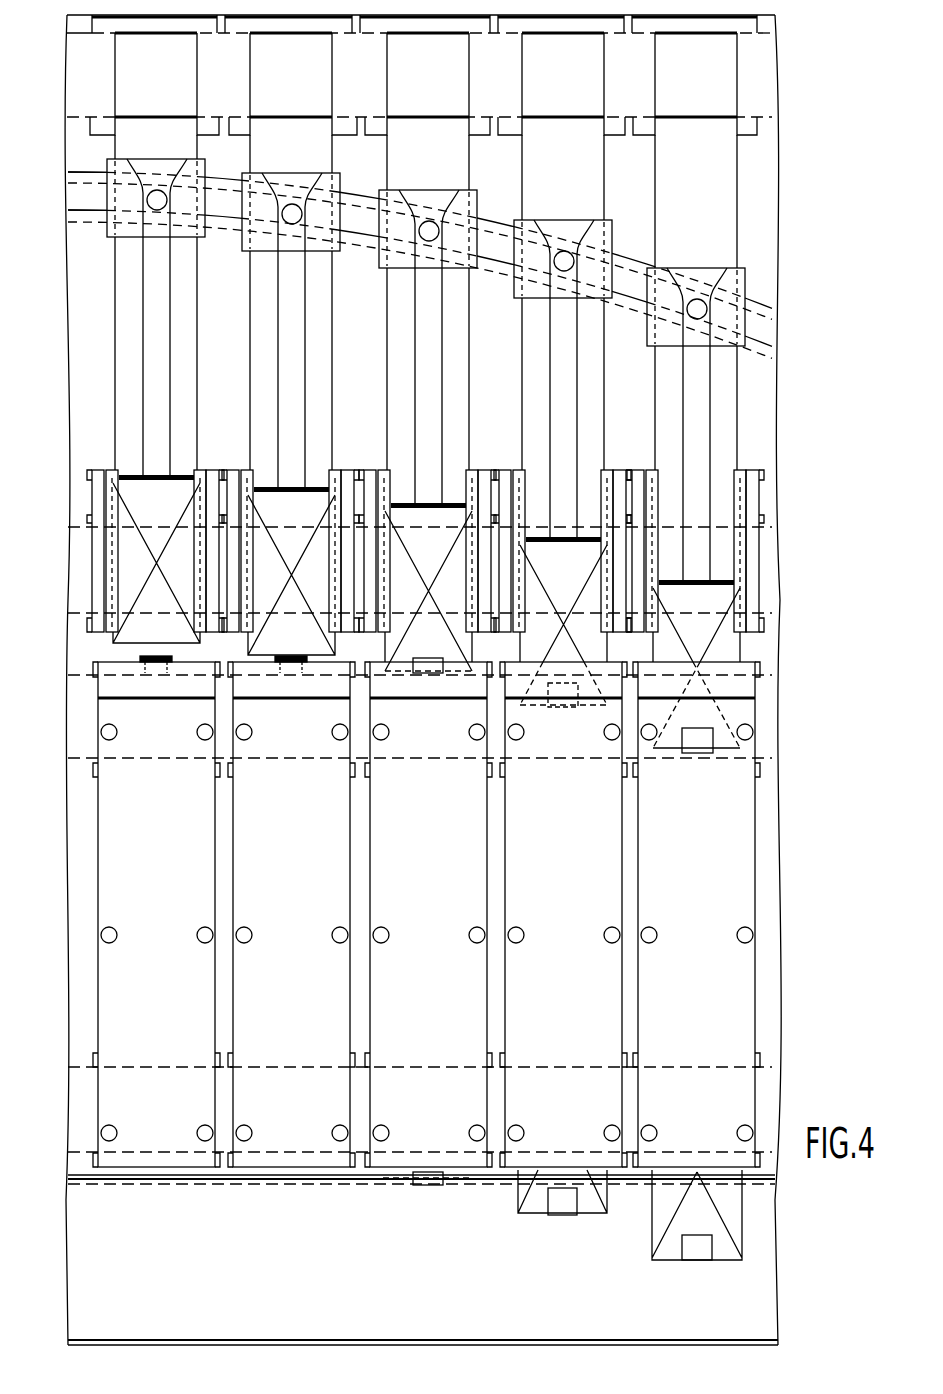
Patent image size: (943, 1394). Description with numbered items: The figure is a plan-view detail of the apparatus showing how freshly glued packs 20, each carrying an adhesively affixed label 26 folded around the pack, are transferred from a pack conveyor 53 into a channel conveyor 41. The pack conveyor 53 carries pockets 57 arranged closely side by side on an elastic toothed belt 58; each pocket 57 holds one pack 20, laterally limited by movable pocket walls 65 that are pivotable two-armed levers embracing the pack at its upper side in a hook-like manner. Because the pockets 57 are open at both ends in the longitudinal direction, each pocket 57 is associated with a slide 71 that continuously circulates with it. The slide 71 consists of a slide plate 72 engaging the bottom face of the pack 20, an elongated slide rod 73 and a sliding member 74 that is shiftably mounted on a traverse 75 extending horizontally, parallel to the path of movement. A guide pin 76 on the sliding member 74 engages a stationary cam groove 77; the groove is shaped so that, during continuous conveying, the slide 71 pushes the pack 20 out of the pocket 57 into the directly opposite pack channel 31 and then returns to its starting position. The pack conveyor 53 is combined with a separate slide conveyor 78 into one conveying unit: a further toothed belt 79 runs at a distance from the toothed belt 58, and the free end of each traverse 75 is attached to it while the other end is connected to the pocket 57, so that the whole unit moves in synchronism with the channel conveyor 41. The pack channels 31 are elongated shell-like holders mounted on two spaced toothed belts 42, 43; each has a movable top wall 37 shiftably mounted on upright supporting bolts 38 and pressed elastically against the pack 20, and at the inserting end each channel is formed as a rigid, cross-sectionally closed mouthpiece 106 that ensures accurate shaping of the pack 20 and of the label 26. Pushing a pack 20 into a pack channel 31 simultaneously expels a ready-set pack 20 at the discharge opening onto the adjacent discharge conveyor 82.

The pack 20 is at (141, 514).
The label 26 is at (140, 657).
The pack channel 31 is at (76, 855).
The top wall 37 is at (139, 904).
The supporting bolt 38 is at (106, 938).
The channel conveyor 41 is at (816, 930).
The toothed belt 42 is at (750, 696).
The toothed belt 43 is at (82, 1068).
The pack conveyor 53 is at (786, 523).
The pocket 57 is at (78, 576).
The toothed belt 58 is at (772, 620).
The pocket wall 65 is at (748, 498).
The slide 71 is at (126, 406).
The slide plate 72 is at (133, 463).
The slide rod 73 is at (695, 400).
The sliding member 74 is at (745, 272).
The traverse 75 is at (128, 297).
The guide pin 76 is at (697, 307).
The cam groove 77 is at (86, 203).
The slide conveyor 78 is at (61, 165).
The toothed belt 79 is at (73, 65).
The discharge conveyor 82 is at (371, 1269).
The mouthpiece 106 is at (110, 682).